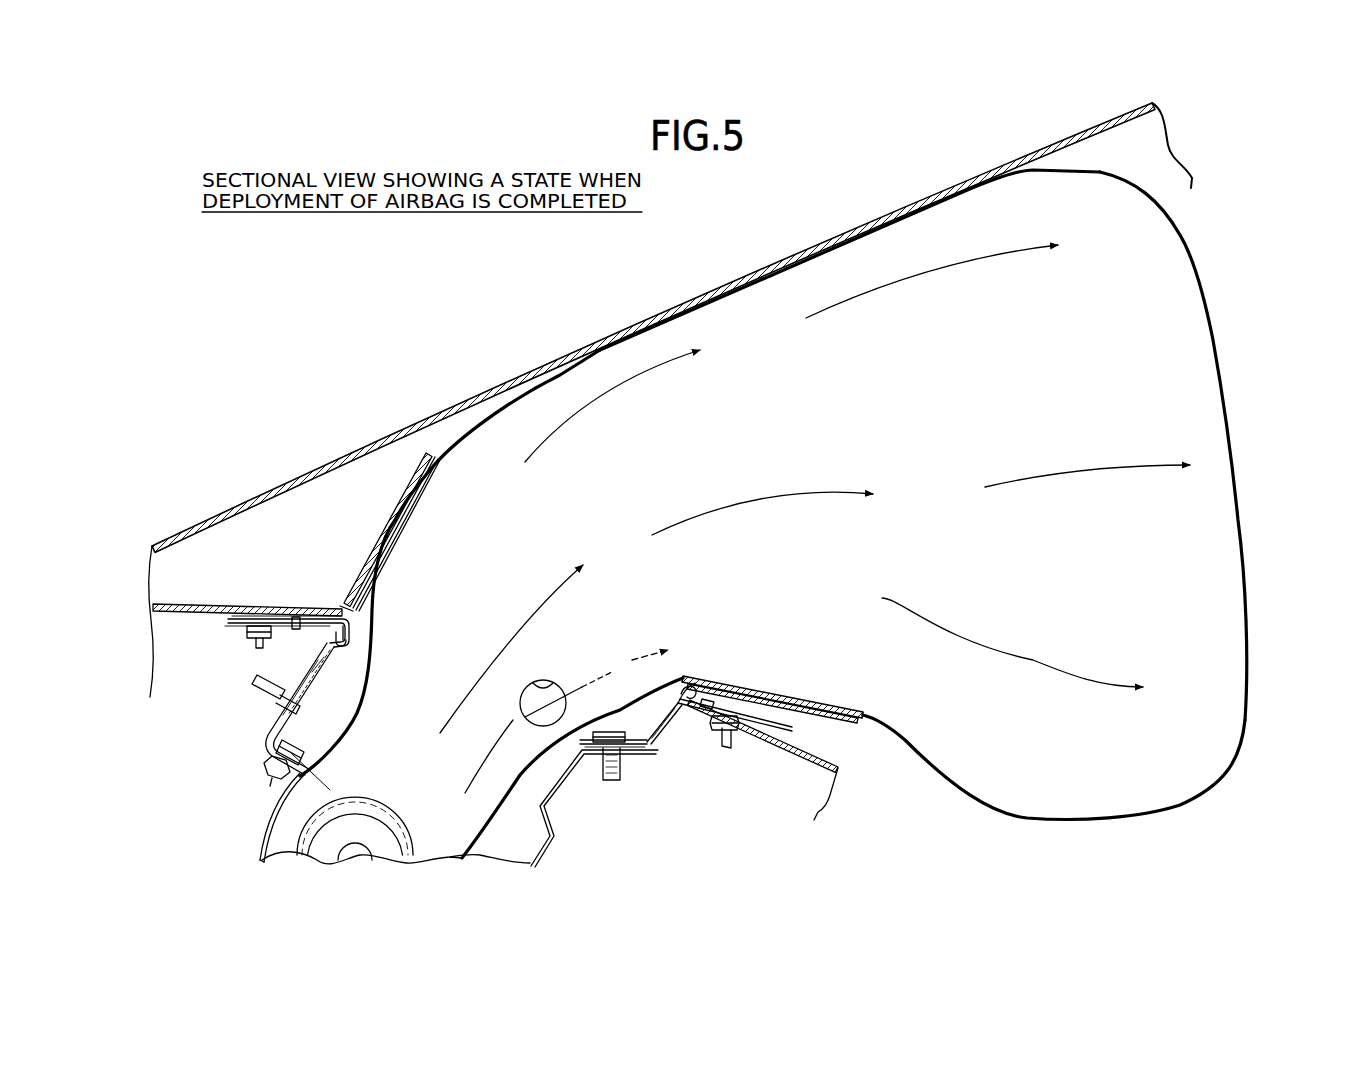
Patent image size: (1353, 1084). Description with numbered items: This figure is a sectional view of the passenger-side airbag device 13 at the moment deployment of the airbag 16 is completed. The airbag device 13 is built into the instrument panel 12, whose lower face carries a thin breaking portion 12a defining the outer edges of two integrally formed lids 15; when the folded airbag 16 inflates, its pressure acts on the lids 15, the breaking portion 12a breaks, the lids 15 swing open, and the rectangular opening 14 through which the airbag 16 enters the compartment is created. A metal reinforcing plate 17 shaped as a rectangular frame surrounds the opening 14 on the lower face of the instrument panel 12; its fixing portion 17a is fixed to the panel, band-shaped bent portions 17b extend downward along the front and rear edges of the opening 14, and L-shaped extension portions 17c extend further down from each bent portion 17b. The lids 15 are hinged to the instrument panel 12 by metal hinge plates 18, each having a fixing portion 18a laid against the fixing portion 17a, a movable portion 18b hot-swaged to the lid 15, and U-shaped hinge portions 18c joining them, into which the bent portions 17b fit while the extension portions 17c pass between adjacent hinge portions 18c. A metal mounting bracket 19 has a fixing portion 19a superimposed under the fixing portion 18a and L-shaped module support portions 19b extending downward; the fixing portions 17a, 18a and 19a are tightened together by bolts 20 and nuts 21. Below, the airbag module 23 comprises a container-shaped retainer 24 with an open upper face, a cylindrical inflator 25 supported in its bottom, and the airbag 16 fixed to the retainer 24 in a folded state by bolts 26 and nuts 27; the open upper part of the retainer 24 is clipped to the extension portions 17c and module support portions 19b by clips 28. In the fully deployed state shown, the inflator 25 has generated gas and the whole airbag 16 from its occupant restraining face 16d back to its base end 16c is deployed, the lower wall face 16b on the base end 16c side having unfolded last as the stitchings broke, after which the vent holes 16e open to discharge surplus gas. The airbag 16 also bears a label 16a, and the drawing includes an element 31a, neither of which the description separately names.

The instrument panel 12 is at (826, 750).
The breaking portion 12a is at (431, 450).
The airbag device 13 is at (592, 814).
The opening 14 is at (437, 447).
The lid 15 is at (397, 500).
The airbag 16 is at (1208, 290).
The upper portion of airbag 16a is at (742, 275).
The lower wall face 16b is at (962, 790).
The base end 16c is at (487, 790).
The occupant restraining face 16d is at (1233, 492).
The vent hole 16e is at (540, 681).
The reinforcing plate 17 is at (350, 628).
The fixing portion 17a is at (280, 608).
The bent portion 17b is at (351, 627).
The extension portion 17c is at (318, 664).
The hinge plate 18 is at (380, 730).
The fixing portion 18a is at (237, 620).
The movable portion 18b is at (377, 537).
The hinge portion 18c is at (353, 638).
The mounting bracket 19 is at (290, 633).
The fixing portion 19a is at (297, 626).
The module support portion 19b is at (327, 655).
The bolt 20 is at (262, 642).
The nut 21 is at (257, 634).
The airbag module 23 is at (267, 817).
The retainer 24 is at (260, 840).
The inflator 25 is at (353, 825).
The bolt 26 is at (292, 752).
The nut 27 is at (270, 764).
The clip 28 is at (273, 683).
The body panel 31a is at (463, 845).